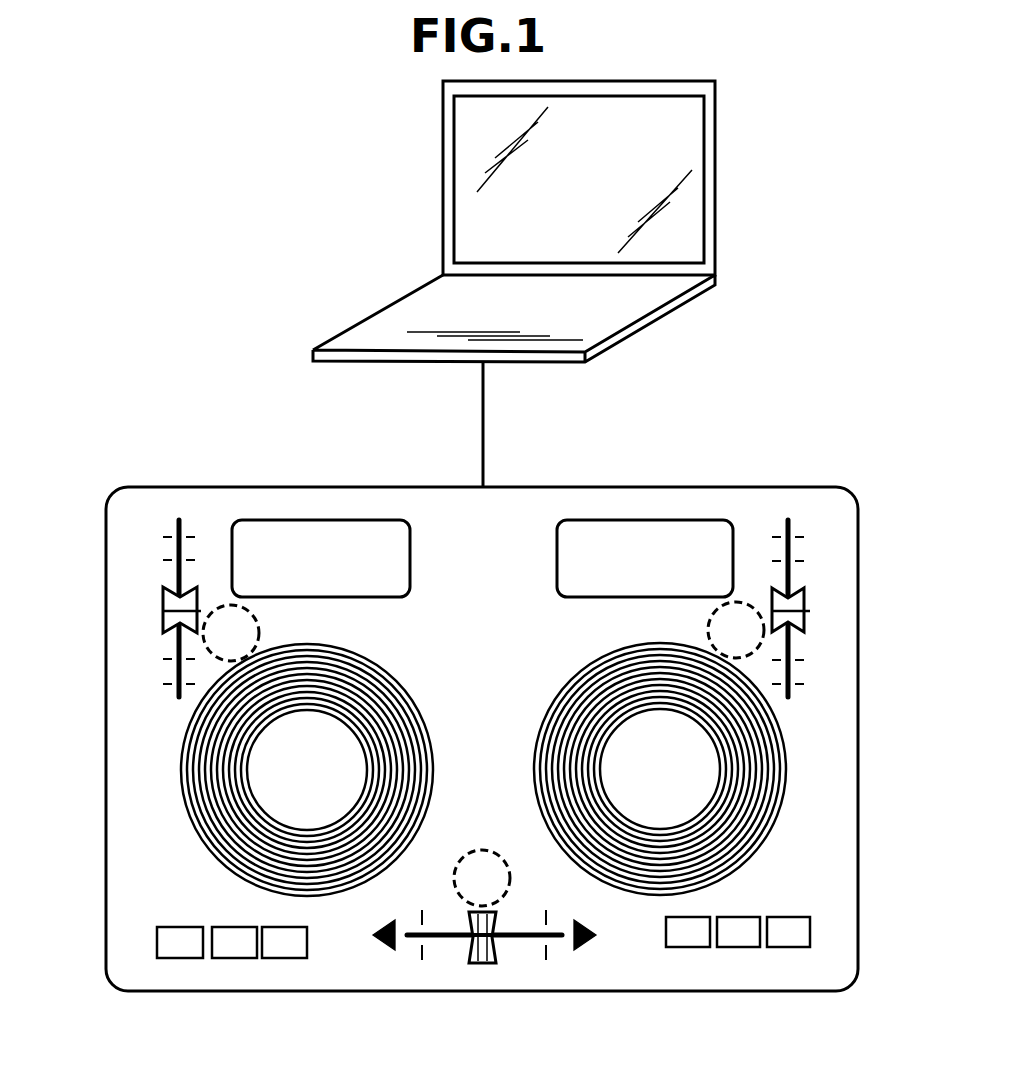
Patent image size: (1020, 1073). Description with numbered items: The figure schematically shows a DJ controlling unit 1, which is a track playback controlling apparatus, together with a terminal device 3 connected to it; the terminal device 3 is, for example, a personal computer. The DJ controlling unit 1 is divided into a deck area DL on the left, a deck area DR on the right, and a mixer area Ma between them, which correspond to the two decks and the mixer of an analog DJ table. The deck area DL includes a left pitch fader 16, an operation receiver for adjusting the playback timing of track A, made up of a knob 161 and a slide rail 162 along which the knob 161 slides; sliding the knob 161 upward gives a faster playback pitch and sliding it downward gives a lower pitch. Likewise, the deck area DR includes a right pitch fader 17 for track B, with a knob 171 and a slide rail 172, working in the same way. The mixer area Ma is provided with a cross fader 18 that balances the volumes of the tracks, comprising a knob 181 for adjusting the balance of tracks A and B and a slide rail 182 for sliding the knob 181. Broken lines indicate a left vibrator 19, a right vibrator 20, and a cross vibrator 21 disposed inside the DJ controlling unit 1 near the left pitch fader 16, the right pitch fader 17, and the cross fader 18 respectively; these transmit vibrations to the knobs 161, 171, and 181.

The DJ controlling unit 1 is at (227, 466).
The terminal device 3 is at (420, 188).
The left pitch fader 16 is at (151, 552).
The knob 161 is at (170, 617).
The slide rail 162 is at (172, 673).
The right pitch fader 17 is at (811, 551).
The knob 171 is at (795, 602).
The slide rail 172 is at (791, 675).
The cross fader 18 is at (480, 977).
The knob 181 is at (495, 952).
The slide rail 182 is at (448, 940).
The left vibrator 19 is at (245, 603).
The right vibrator 20 is at (739, 602).
The cross vibrator 21 is at (507, 872).
The deck area DL is at (161, 724).
The deck area DR is at (803, 726).
The mixer area Ma is at (603, 977).